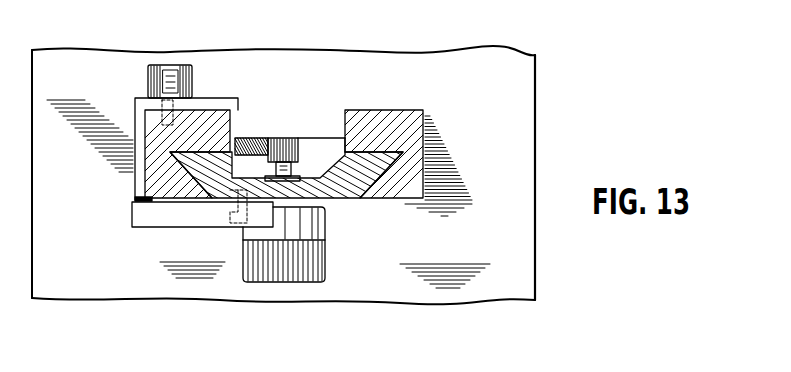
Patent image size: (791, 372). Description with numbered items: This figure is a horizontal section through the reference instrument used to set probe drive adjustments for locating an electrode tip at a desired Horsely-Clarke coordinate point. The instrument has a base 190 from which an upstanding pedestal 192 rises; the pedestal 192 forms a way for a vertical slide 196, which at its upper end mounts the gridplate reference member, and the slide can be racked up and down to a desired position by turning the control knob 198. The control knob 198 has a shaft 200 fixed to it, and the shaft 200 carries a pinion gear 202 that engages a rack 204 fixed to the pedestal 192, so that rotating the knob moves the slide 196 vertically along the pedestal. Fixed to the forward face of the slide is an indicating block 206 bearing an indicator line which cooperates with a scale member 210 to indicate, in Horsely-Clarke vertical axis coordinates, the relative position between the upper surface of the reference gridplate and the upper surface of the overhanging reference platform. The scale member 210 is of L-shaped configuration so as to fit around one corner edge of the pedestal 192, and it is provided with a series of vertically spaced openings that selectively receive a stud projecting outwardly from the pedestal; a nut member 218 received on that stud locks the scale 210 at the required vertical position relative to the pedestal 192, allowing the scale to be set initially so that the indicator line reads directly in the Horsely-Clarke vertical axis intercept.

The base 190 is at (518, 110).
The pedestal 192 is at (404, 112).
The vertical slide 196 is at (342, 185).
The control knob 198 is at (305, 260).
The shaft 200 is at (305, 163).
The pinion gear 202 is at (290, 138).
The rack 204 is at (250, 138).
The indicating block 206 is at (153, 218).
The scale member 210 is at (135, 178).
The nut member 218 is at (154, 65).